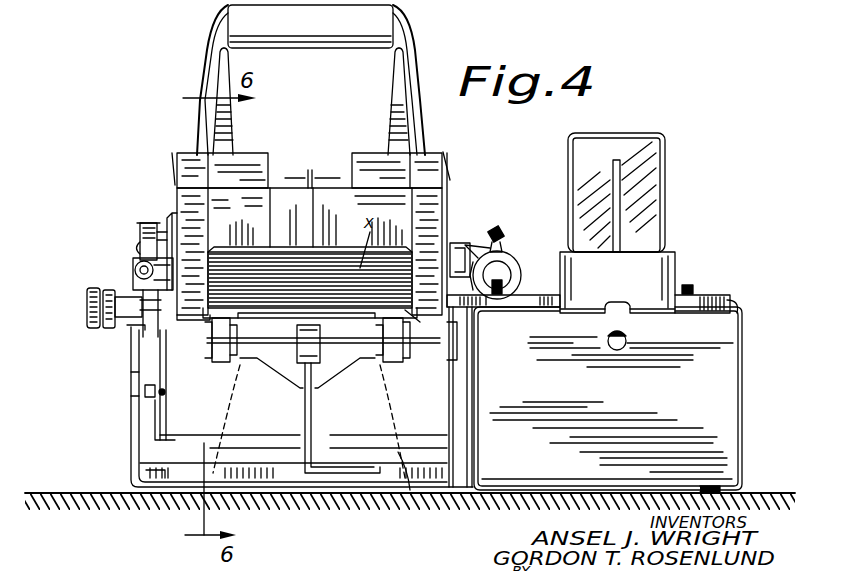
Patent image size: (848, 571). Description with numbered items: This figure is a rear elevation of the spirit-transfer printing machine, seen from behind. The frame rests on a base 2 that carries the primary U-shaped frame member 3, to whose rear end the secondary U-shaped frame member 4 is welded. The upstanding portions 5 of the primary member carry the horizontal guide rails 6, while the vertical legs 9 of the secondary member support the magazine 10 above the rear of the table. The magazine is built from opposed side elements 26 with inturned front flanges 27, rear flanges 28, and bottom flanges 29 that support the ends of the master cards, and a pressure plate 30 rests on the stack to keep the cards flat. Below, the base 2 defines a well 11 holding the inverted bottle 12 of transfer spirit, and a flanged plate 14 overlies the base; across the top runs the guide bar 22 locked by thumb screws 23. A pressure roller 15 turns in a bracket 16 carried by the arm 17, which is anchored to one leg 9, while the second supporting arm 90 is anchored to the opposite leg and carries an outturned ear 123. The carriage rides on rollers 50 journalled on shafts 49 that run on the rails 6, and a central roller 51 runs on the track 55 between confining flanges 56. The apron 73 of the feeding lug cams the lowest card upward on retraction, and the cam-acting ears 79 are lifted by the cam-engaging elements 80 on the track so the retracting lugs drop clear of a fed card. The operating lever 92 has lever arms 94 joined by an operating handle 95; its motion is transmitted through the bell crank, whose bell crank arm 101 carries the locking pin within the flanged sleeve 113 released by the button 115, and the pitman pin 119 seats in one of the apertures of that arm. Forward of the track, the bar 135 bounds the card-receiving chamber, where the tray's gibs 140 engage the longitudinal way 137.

The base 2 is at (652, 403).
The primary U-shaped frame member 3 is at (124, 455).
The secondary U-shaped frame member 4 is at (160, 468).
The upstanding portions 5 is at (133, 428).
The guide rails 6 is at (473, 373).
The legs 9 is at (178, 427).
The magazine 10 is at (452, 178).
The well 11 is at (626, 287).
The bottle 12 is at (648, 186).
The flanged plate 14 is at (752, 310).
The pressure roller 15 is at (508, 258).
The bracket 16 is at (495, 228).
The arm 17 is at (458, 245).
The guide bar 22 is at (528, 292).
The thumb screws 23 is at (690, 285).
The side elements 26 is at (178, 164).
The front flanges 27 is at (243, 176).
The rear flanges 28 is at (205, 210).
The bottom flanges 29 is at (418, 312).
The pressure plate 30 is at (280, 250).
The shafts 49 is at (364, 338).
The rollers 50 is at (165, 343).
The central roller 51 is at (320, 350).
The track 55 is at (313, 412).
The confining flanges 56 is at (285, 378).
The apron 73 is at (282, 318).
The cam-acting ears 79 is at (226, 364).
The cam-engaging elements 80 is at (240, 368).
The supporting arm 90 is at (152, 243).
The operating lever 92 is at (420, 52).
The lever arms 94 is at (213, 75).
The operating handle 95 is at (330, 44).
The bell crank arm 101 is at (162, 410).
The flanged sleeve 113 is at (110, 327).
The button 115 is at (87, 307).
The pin 119 is at (160, 394).
The outturned ear 123 is at (133, 282).
The bar 135 is at (398, 452).
The way 137 is at (514, 8).
The gibs 140 is at (518, 8).